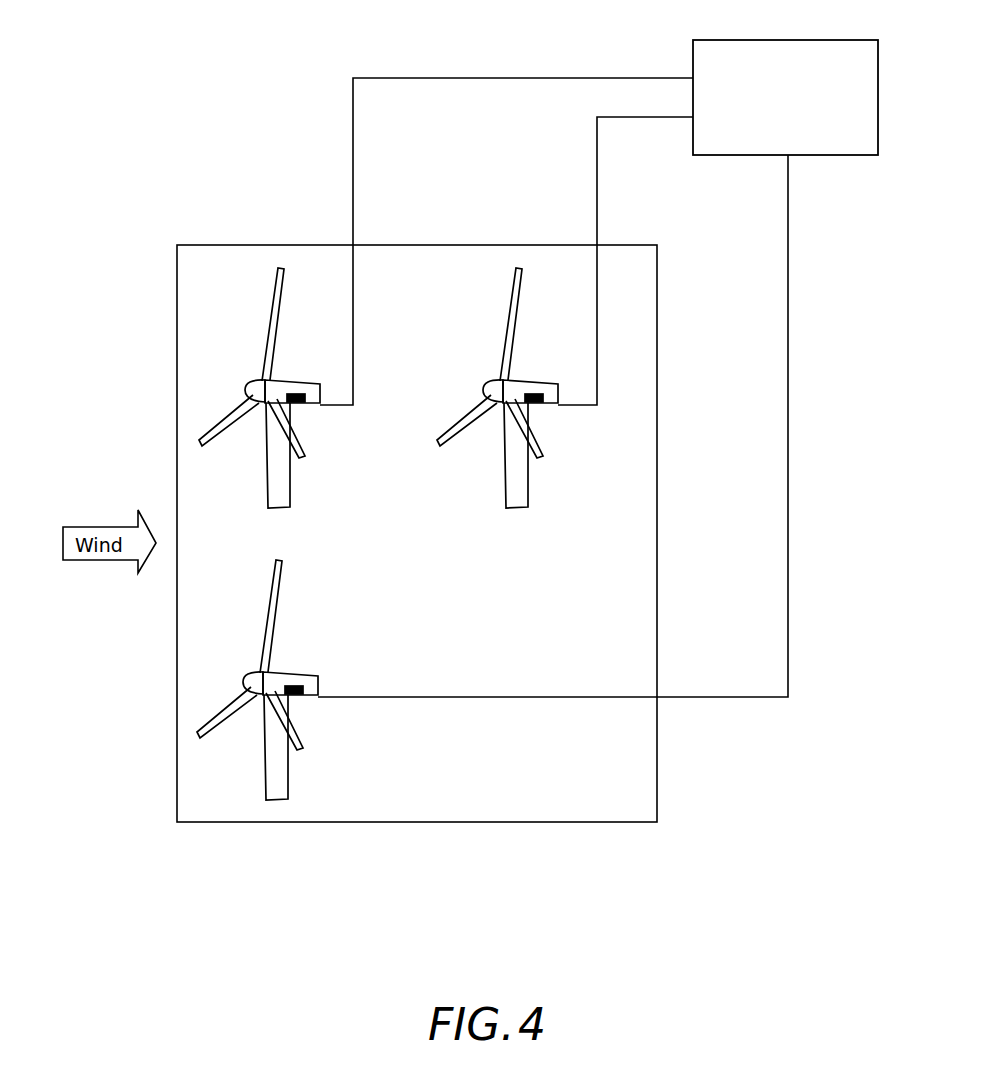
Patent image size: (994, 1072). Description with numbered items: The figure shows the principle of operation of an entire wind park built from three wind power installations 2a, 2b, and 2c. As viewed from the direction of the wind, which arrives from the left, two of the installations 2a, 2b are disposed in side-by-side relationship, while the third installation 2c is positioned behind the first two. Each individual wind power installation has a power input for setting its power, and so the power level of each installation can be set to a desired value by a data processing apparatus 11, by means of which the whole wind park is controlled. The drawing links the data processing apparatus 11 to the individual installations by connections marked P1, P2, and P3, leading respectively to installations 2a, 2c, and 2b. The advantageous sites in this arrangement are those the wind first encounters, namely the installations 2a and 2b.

The wind power installation 2a is at (248, 381).
The wind power installation 2b is at (246, 673).
The wind power installation 2c is at (486, 381).
The data processing apparatus 11 is at (720, 40).
The data link to turbine 2a P1 is at (546, 83).
The data link to turbine 2c P2 is at (592, 166).
The data link to turbine 2b P3 is at (783, 249).